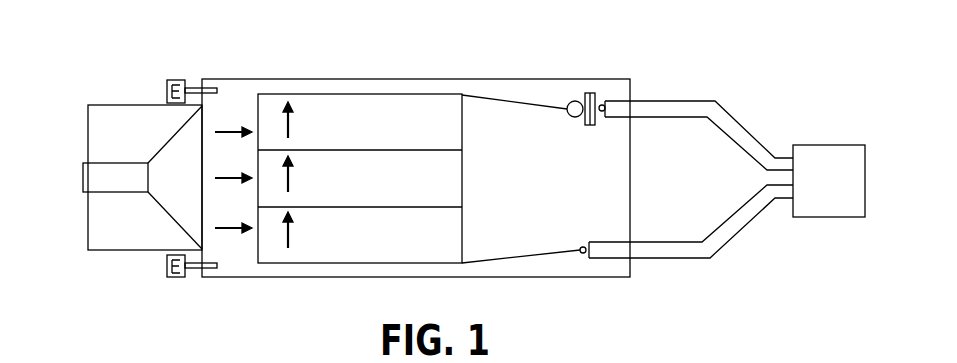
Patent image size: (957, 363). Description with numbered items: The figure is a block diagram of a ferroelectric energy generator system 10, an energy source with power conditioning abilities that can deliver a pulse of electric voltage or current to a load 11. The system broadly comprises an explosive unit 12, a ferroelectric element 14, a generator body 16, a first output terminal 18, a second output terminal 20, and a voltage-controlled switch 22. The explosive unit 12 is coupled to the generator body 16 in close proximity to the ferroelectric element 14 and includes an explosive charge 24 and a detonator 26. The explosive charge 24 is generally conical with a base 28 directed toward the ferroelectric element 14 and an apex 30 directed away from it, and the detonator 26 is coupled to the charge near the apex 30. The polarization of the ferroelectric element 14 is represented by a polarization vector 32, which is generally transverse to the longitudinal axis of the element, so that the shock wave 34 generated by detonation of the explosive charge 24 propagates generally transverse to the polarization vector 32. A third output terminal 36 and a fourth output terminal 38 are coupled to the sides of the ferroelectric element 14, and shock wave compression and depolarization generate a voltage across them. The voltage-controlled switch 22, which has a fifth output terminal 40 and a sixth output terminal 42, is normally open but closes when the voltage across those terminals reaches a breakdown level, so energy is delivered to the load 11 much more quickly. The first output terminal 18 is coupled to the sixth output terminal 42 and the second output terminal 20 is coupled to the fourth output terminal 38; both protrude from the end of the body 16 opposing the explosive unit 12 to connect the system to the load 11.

The ferroelectric energy generator system 10 is at (412, 53).
The load 11 is at (815, 150).
The explosive unit 12 is at (133, 88).
The ferroelectric element 14 is at (447, 128).
The generator body 16 is at (552, 267).
The first output terminal 18 is at (660, 103).
The second output terminal 20 is at (655, 252).
The voltage-controlled switch 22 is at (588, 129).
The explosive charge 24 is at (180, 173).
The detonator 26 is at (95, 178).
The base 28 is at (200, 128).
The apex 30 is at (148, 193).
The polarization vector 32 is at (293, 130).
The shock wave 34 is at (225, 130).
The third output terminal 36 is at (472, 95).
The fourth output terminal 38 is at (465, 265).
The fifth output terminal 40 is at (545, 103).
The sixth output terminal 42 is at (598, 96).